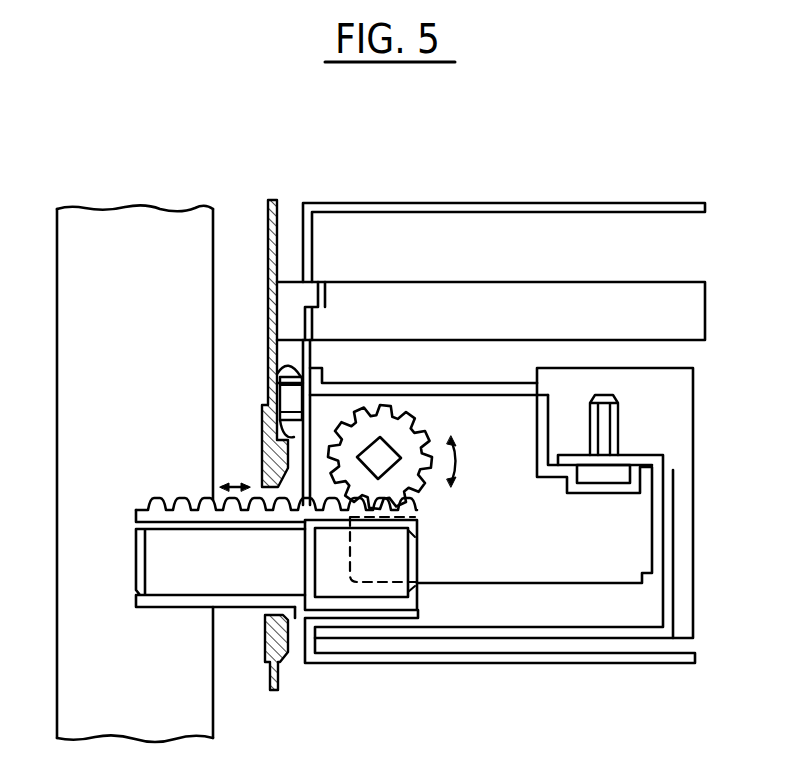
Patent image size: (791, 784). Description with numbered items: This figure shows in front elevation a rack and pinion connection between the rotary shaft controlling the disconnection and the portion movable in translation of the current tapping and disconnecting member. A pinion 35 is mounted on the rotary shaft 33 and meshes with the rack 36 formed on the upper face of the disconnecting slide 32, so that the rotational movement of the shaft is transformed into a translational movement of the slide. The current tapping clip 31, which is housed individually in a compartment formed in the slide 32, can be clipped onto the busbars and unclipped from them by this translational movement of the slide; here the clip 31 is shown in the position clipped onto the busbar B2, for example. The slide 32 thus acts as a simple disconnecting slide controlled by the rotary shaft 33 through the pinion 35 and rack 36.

The busbar B2 is at (78, 274).
The current tapping clip 31 is at (178, 572).
The disconnecting slide 32 is at (248, 496).
The rotary shaft 33 is at (383, 455).
The pinion 35 is at (412, 492).
The rack 36 is at (168, 499).